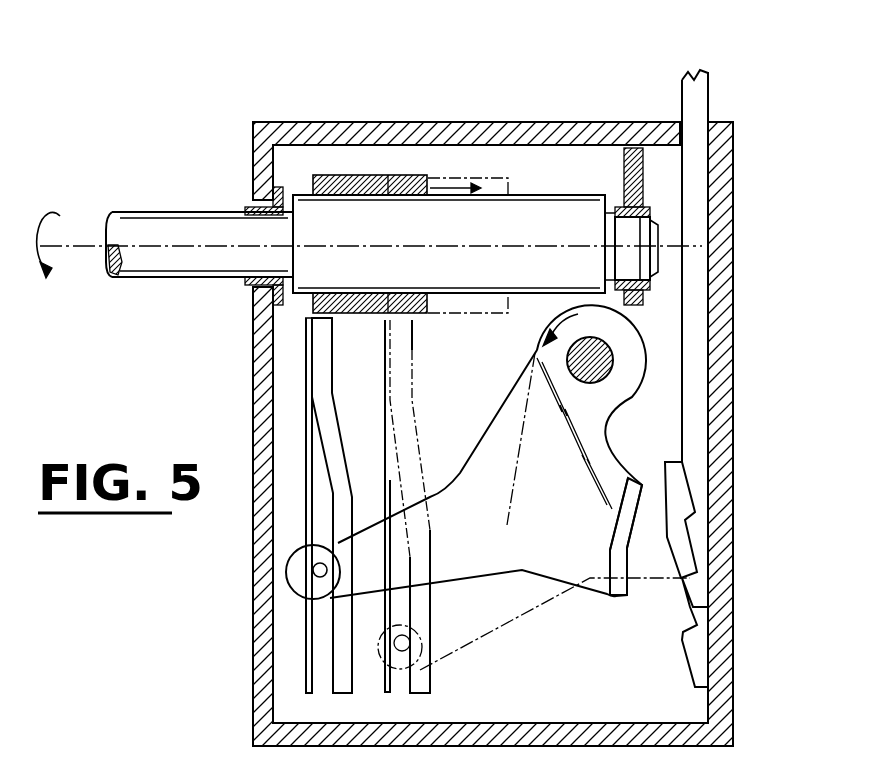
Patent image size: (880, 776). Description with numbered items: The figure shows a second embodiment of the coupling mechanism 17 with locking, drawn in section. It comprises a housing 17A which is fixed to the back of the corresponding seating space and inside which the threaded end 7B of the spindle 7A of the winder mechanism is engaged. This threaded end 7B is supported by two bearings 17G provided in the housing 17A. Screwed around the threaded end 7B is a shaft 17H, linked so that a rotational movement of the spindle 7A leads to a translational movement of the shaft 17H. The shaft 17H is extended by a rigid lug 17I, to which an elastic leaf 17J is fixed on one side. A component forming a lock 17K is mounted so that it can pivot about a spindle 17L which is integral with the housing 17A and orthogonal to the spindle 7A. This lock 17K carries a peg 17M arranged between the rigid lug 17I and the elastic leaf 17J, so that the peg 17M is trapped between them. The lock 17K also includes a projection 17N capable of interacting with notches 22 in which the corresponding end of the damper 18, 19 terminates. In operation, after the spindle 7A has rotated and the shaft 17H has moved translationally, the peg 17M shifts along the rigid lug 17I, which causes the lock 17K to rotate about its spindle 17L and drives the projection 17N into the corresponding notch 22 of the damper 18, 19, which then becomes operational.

The spindle 7A is at (160, 230).
The threaded end 7B is at (518, 206).
The coupling mechanism with locking 17 is at (498, 106).
The housing 17A is at (411, 123).
The bearings 17G is at (248, 208).
The shaft 17H is at (349, 175).
The rigid lug 17I is at (325, 410).
The elastic leaf 17J is at (305, 640).
The component forming a lock 17K is at (645, 380).
The spindle 17L is at (600, 358).
The peg 17M is at (312, 578).
The projection 17N is at (620, 597).
The damper 18 is at (702, 88).
The damper 19 is at (695, 267).
The notches 22 is at (693, 501).